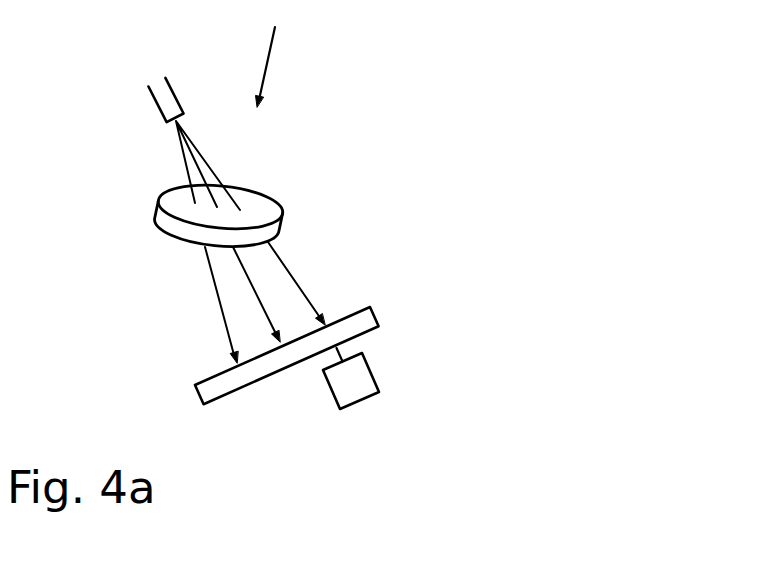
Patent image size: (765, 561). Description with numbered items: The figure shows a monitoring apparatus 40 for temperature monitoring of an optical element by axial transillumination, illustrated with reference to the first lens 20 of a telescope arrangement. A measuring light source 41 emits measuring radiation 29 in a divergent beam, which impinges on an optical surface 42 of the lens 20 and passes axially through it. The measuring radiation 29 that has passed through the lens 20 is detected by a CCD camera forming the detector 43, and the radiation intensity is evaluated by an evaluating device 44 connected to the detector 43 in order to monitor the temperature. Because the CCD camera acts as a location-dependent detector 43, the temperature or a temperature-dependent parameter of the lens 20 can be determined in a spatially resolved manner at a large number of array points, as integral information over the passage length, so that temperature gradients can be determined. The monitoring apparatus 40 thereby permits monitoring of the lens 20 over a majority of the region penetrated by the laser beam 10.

The laser beam 10 is at (268, 57).
The first lens 20 is at (263, 218).
The measuring radiation 29 is at (217, 165).
The apparatus for temperature monitoring 40 is at (145, 158).
The measuring light source 41 is at (157, 87).
The optical surface 42 is at (250, 204).
The detector 43 is at (368, 312).
The evaluating device 44 is at (367, 380).